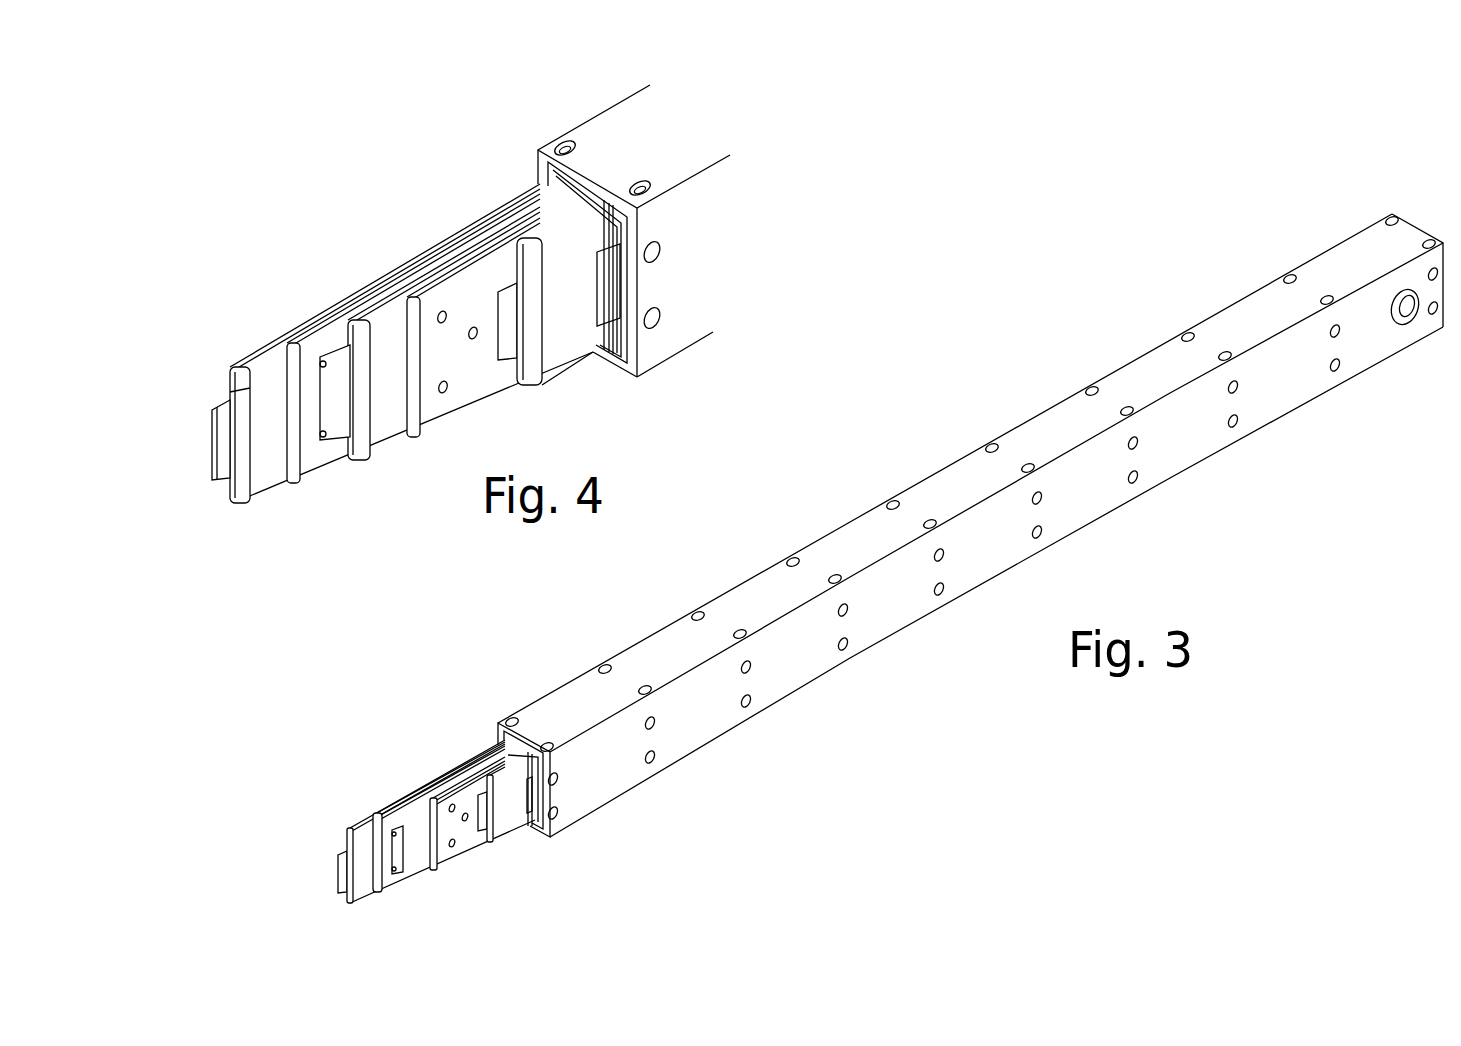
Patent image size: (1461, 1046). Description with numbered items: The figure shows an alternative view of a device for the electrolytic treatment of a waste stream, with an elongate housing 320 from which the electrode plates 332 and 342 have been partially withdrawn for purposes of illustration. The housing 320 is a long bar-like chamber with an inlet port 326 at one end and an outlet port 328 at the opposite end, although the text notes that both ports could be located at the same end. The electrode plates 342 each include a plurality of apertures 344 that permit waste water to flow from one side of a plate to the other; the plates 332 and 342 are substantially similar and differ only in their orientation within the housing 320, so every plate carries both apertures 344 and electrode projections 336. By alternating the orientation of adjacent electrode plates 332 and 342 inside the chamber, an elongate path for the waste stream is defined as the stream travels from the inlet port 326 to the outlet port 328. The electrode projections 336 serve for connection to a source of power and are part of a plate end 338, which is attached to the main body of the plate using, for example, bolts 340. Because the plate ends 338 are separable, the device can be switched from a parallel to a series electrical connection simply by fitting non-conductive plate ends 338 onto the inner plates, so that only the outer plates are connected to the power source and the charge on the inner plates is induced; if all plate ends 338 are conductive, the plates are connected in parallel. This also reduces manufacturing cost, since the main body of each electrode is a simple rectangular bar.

In FIG. 3, the elongate housing 320 is at (970, 525).
In FIG. 3, the inlet port 326 is at (1406, 327).
In FIG. 3, the outlet port 328 is at (537, 700).
In FIG. 4, the electrode plate 332 is at (272, 473).
In FIG. 3, the electrode plate 332 is at (502, 823).
In FIG. 4, the electrode projection 336 is at (210, 460).
In FIG. 4, the plate end 338 is at (245, 377).
In FIG. 4, the bolt 340 is at (230, 392).
In FIG. 4, the electrode plate 342 is at (440, 430).
In FIG. 3, the electrode plate 342 is at (452, 795).
In FIG. 4, the aperture 344 is at (447, 390).
In FIG. 3, the aperture 344 is at (465, 811).